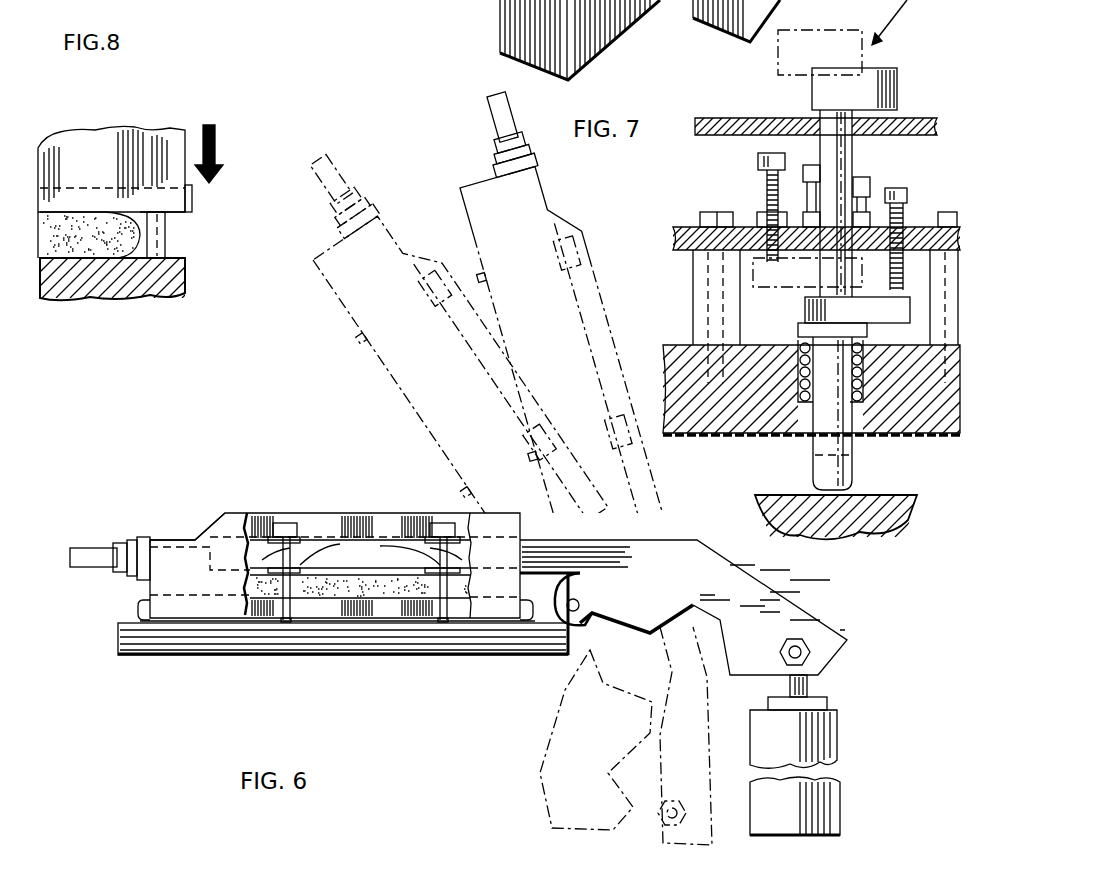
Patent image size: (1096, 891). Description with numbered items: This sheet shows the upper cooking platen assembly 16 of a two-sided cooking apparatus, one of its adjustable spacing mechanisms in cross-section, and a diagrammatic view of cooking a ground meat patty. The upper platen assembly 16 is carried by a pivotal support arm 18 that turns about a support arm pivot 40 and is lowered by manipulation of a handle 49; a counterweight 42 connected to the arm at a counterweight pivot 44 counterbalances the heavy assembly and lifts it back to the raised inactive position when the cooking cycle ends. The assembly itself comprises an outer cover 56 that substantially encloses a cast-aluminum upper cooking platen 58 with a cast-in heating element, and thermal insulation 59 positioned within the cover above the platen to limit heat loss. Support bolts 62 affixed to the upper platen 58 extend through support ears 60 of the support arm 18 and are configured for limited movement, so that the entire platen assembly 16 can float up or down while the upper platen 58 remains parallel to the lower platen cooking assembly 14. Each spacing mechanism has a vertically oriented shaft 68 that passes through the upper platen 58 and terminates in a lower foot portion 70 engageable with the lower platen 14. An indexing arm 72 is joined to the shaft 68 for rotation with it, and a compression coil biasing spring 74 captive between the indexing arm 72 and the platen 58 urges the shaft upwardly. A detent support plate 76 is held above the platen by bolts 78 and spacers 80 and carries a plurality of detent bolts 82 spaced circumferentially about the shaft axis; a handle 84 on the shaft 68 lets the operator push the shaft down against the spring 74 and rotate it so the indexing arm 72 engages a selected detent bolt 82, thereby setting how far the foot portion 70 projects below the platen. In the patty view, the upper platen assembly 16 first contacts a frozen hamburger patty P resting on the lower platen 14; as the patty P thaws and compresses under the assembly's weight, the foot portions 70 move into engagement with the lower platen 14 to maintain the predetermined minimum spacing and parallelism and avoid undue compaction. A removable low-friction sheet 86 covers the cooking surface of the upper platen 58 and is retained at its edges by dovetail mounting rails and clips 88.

In FIG. 8, the lower platen cooking assembly 14 is at (188, 272).
In FIG. 7, the lower platen cooking assembly 14 is at (768, 493).
In FIG. 6, the lower platen cooking assembly 14 is at (118, 630).
In FIG. 8, the upper platen assembly 16 is at (165, 128).
In FIG. 6, the upper platen assembly 16 is at (227, 500).
In FIG. 6, the pivotal support arm 18 is at (683, 555).
In FIG. 6, the support arm pivot 40 is at (580, 603).
In FIG. 6, the counterweight 42 is at (505, 0).
In FIG. 6, the counterweight pivot 44 is at (783, 642).
In FIG. 6, the handle 49 is at (75, 548).
In FIG. 7, the outer cover 56 is at (717, 120).
In FIG. 6, the outer cover 56 is at (222, 512).
In FIG. 8, the upper cooking platen 58 is at (192, 200).
In FIG. 7, the upper cooking platen 58 is at (680, 363).
In FIG. 6, the upper cooking platen 58 is at (355, 603).
In FIG. 6, the thermal insulation 59 is at (248, 577).
In FIG. 6, the support ears 60 is at (362, 551).
In FIG. 6, the support bolts 62 is at (443, 522).
In FIG. 7, the vertical shaft 68 is at (841, 157).
In FIG. 8, the lower foot portion 70 is at (167, 233).
In FIG. 7, the lower foot portion 70 is at (853, 478).
In FIG. 6, the lower foot portion 70 is at (283, 622).
In FIG. 7, the indexing arm 72 is at (886, 305).
In FIG. 7, the compression coil biasing spring 74 is at (860, 390).
In FIG. 7, the detent support plate 76 is at (747, 227).
In FIG. 7, the bolts 78 is at (703, 217).
In FIG. 7, the spacers 80 is at (695, 278).
In FIG. 7, the detent bolts 82 is at (758, 160).
In FIG. 7, the handle 84 is at (888, 70).
In FIG. 8, the low-friction sheet 86 is at (63, 211).
In FIG. 6, the low-friction sheet 86 is at (197, 623).
In FIG. 6, the mounting rails and clips 88 is at (140, 608).
In FIG. 8, the hamburger patty P is at (116, 213).